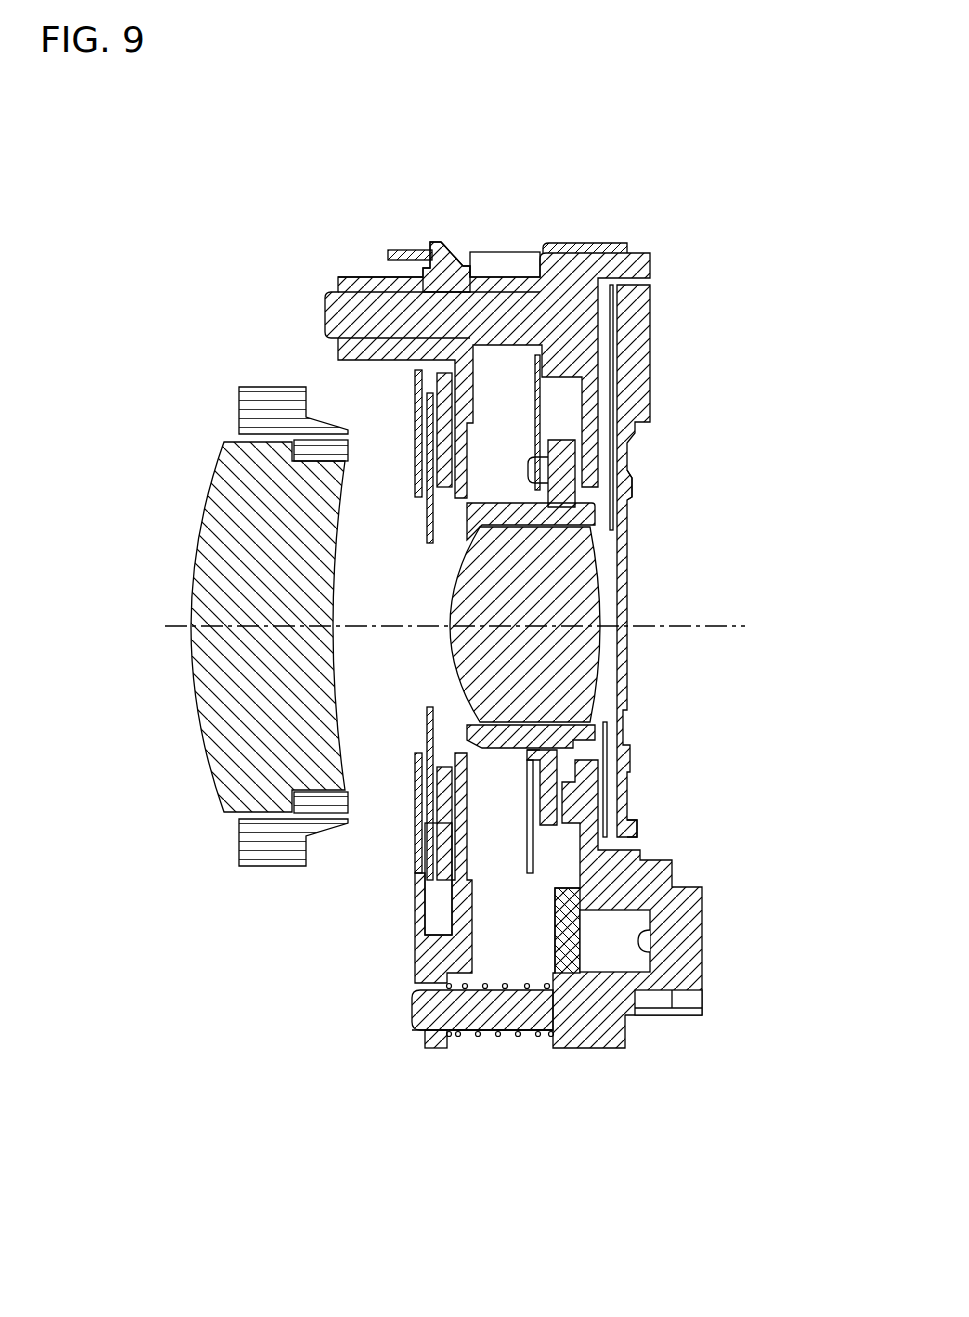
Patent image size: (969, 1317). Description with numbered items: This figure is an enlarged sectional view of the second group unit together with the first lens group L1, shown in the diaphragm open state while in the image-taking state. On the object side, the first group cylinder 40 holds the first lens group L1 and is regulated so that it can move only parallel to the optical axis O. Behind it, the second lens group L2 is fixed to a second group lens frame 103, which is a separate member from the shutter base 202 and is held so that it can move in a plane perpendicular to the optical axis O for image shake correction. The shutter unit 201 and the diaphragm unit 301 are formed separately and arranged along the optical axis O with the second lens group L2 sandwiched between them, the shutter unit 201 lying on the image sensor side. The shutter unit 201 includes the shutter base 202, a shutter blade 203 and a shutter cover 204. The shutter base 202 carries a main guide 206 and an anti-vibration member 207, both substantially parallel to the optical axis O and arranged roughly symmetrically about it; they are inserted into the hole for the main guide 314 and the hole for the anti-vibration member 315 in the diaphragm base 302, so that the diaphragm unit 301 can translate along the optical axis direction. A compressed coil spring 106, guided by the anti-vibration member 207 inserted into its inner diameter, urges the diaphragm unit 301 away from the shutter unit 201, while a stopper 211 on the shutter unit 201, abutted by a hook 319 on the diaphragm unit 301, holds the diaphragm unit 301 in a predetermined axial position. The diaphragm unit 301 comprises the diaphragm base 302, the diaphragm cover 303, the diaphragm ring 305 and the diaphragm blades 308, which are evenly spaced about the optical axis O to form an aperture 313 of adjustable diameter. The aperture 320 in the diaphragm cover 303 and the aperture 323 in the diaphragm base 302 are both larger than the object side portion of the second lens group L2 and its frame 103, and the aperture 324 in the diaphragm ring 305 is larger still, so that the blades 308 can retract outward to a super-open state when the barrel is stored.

The optical axis O is at (162, 626).
The first lens group L1 is at (218, 740).
The second lens group L2 is at (548, 655).
The first group cylinder 40 is at (245, 836).
The second group lens frame 103 is at (605, 492).
The spring 106 is at (517, 1040).
The shutter unit 201 is at (517, 228).
The shutter base 202 is at (680, 923).
The shutter blade 203 is at (628, 486).
The shutter cover 204 is at (633, 323).
The main guide 206 is at (345, 317).
The anti-vibration member 207 is at (480, 1012).
The stopper 211 is at (410, 250).
The diaphragm unit 301 is at (407, 1063).
The diaphragm base 302 is at (473, 252).
The diaphragm cover 303 is at (418, 986).
The diaphragm ring 305 is at (438, 908).
The diaphragm blades 308 is at (462, 508).
The aperture 313 is at (420, 650).
The hole for the main guide 314 is at (388, 283).
The hole for the anti-vibration member 315 is at (414, 992).
The hook 319 is at (445, 242).
The aperture 320 is at (445, 496).
The aperture 323 is at (432, 540).
The aperture 324 is at (420, 516).